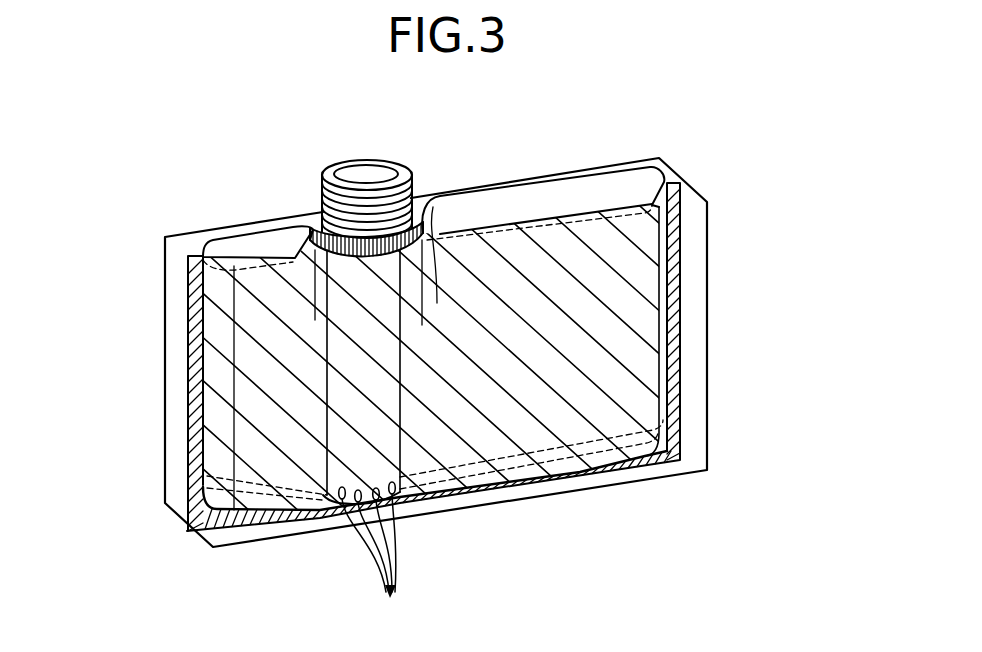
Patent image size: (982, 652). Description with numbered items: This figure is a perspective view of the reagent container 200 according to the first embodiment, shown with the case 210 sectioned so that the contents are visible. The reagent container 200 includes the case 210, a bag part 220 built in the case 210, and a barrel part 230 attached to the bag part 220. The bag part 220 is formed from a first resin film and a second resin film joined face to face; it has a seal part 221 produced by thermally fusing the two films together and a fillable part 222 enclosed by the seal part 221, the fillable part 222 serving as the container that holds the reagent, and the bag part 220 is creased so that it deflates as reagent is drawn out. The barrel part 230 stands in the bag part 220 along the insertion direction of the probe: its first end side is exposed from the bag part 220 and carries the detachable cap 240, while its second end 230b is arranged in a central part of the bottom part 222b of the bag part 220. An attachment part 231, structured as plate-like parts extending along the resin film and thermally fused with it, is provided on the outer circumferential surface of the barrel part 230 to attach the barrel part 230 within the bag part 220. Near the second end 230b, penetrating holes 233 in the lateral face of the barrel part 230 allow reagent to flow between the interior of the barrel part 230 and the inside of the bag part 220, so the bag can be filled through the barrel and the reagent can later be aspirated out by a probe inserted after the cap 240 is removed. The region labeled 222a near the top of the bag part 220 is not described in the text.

The reagent container 200 is at (111, 142).
The case 210 is at (165, 291).
The bag part 220 is at (700, 242).
The seal part 221 is at (680, 285).
The fillable part 222 is at (650, 323).
The cell body top portion 222a is at (572, 202).
The bottom part 222b is at (557, 463).
The barrel part 230 is at (414, 533).
The second end 230b is at (323, 500).
The attachment part 231 is at (433, 207).
The penetrating holes 233 is at (377, 560).
The cap 240 is at (368, 172).